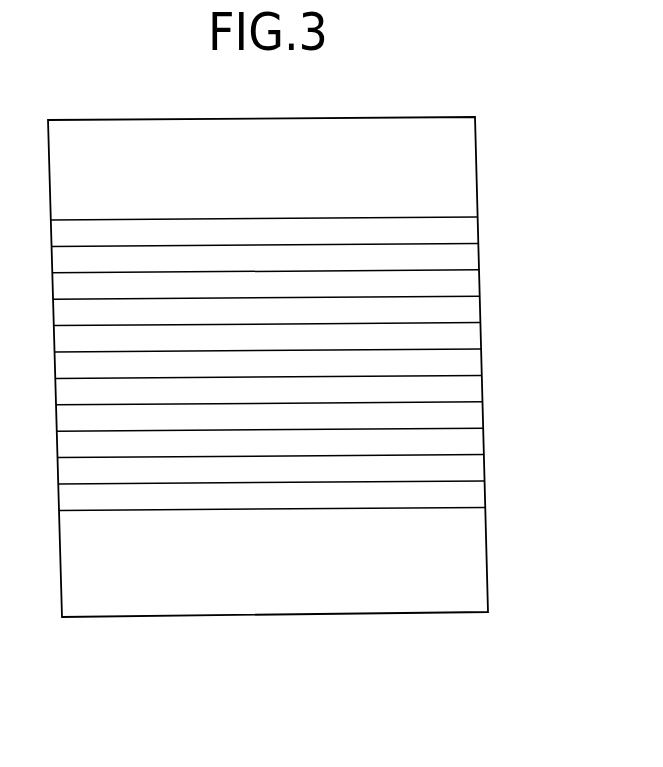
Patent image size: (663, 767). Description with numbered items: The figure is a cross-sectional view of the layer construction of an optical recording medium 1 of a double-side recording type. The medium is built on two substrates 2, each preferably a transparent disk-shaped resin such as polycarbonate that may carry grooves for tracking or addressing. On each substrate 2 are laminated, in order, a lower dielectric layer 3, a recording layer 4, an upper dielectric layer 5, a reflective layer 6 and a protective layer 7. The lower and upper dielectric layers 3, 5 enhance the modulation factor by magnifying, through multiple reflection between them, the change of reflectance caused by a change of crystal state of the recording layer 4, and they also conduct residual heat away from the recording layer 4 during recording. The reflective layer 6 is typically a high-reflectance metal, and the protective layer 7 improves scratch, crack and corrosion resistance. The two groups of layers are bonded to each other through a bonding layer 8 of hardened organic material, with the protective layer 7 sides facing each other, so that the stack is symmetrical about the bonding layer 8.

The optical recording medium 1 is at (246, 617).
The substrate 2 is at (398, 177).
The lower dielectric layer 3 is at (418, 226).
The recording layer 4 is at (418, 253).
The upper dielectric layer 5 is at (418, 279).
The reflective layer 6 is at (418, 305).
The protective layer 7 is at (418, 332).
The bonding layer 8 is at (418, 358).